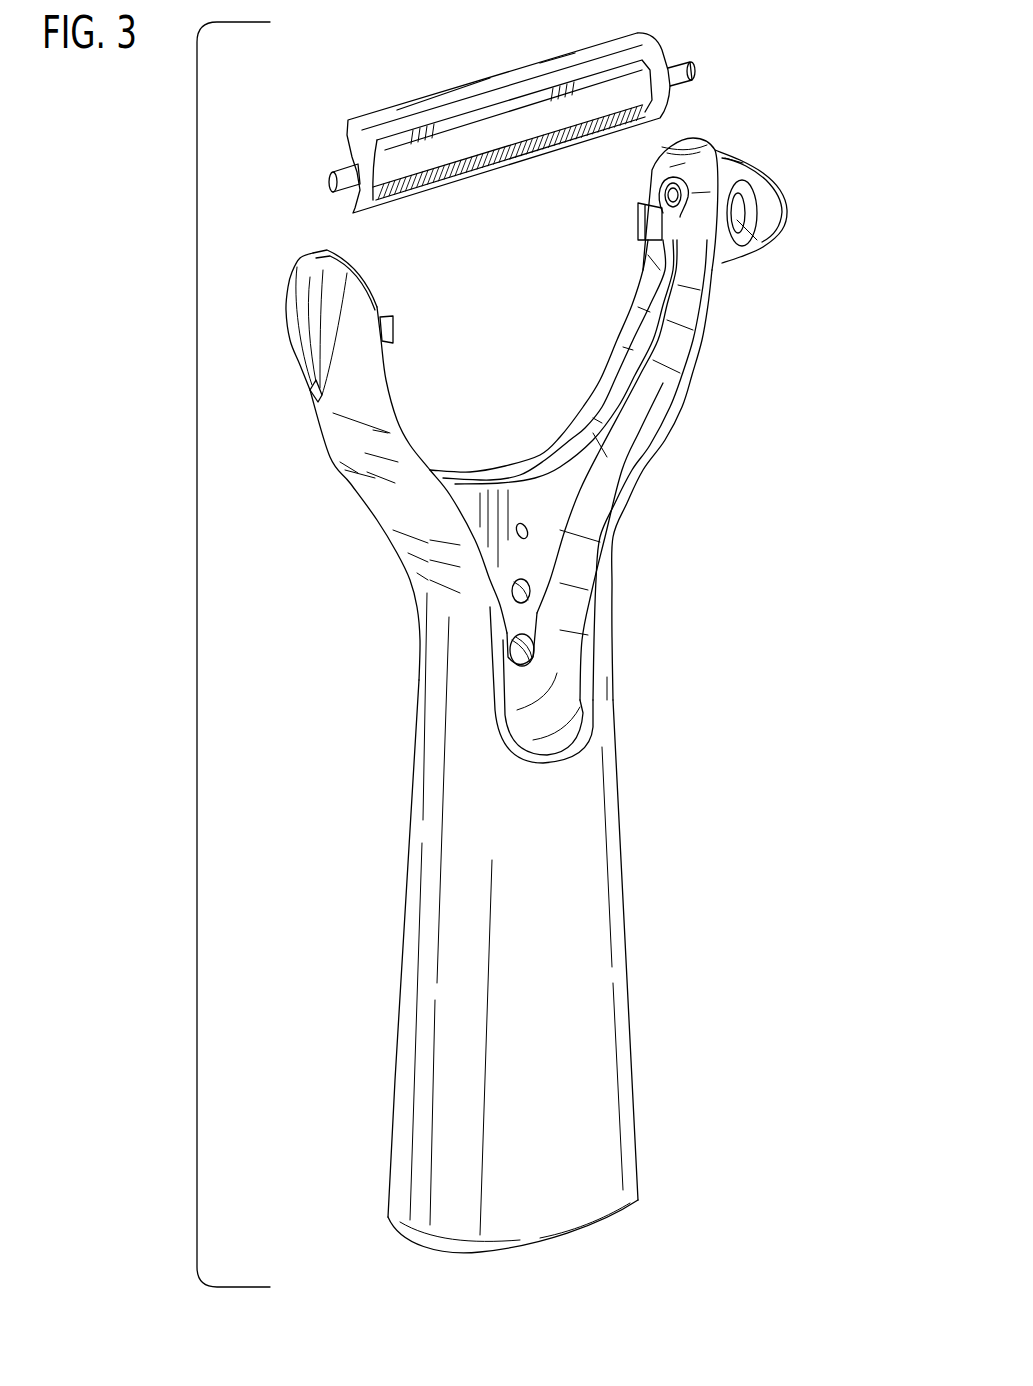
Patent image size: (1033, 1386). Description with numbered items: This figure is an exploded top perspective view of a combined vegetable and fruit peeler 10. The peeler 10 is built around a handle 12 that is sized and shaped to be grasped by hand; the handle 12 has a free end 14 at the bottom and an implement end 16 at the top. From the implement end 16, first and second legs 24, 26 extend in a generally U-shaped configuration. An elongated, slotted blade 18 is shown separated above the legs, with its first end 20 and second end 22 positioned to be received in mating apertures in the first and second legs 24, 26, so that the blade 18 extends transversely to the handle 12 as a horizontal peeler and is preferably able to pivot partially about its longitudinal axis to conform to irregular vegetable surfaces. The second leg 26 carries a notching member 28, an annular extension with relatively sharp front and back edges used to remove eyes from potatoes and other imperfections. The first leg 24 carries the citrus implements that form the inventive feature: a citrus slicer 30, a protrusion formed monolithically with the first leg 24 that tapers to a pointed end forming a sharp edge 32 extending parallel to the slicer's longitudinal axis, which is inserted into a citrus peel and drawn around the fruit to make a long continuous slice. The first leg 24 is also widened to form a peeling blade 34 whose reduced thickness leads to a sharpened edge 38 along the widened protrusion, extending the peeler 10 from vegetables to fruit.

The peeler 10 is at (793, 62).
The handle 12 is at (568, 916).
The free end 14 is at (594, 1250).
The implement end 16 is at (645, 647).
The blade 18 is at (520, 77).
The first end 20 is at (340, 180).
The second end 22 is at (682, 66).
The first leg 24 is at (360, 387).
The second leg 26 is at (690, 300).
The notching member 28 is at (780, 187).
The citrus slicer 30 is at (292, 322).
The sharp edge 32 is at (320, 398).
The peeling blade 34 is at (362, 457).
The sharpened edge 38 is at (415, 444).